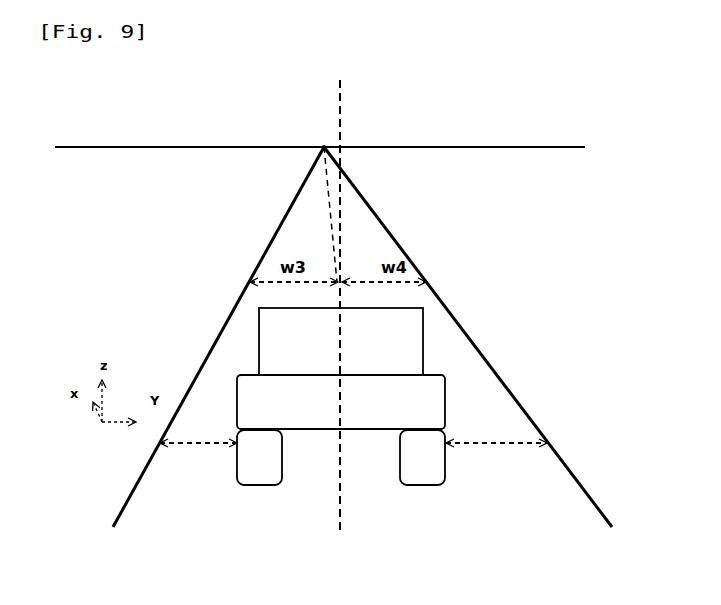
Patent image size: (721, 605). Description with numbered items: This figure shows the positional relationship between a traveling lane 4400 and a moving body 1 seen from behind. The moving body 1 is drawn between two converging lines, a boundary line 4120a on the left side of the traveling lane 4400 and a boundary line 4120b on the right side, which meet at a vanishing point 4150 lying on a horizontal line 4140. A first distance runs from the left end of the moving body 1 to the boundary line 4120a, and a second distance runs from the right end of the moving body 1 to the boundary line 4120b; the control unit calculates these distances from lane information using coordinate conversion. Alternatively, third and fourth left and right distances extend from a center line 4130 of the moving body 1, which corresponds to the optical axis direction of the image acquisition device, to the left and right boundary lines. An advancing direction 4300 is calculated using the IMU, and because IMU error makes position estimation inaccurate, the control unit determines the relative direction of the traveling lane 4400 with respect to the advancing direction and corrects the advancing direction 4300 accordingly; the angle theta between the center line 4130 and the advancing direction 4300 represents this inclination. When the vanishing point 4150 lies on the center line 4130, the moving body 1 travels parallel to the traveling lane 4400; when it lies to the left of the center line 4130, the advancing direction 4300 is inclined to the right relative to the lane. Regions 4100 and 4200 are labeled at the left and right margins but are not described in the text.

The moving body 1 is at (426, 343).
The left side region (width w1) 4100 is at (198, 470).
The right side region (width w2) 4200 is at (496, 470).
The advancing direction 4300 is at (320, 181).
The traveling lane 4400 is at (375, 508).
The boundary line 4120a is at (218, 337).
The boundary line 4120b is at (468, 337).
The center line 4130 is at (366, 304).
The horizontal line 4140 is at (320, 132).
The vanishing point 4150 is at (322, 145).